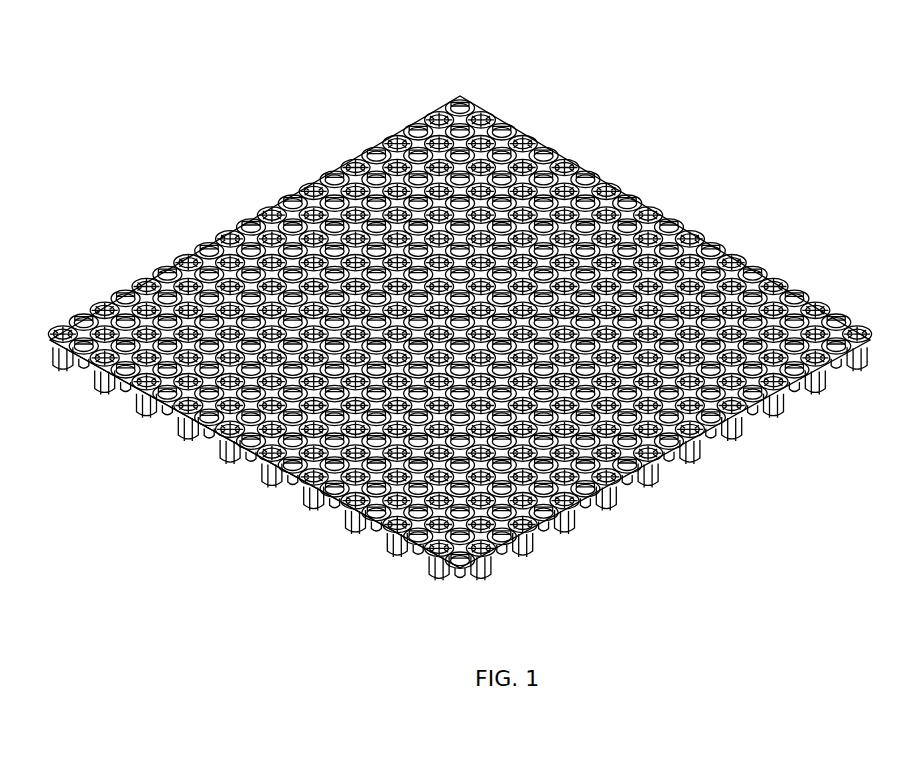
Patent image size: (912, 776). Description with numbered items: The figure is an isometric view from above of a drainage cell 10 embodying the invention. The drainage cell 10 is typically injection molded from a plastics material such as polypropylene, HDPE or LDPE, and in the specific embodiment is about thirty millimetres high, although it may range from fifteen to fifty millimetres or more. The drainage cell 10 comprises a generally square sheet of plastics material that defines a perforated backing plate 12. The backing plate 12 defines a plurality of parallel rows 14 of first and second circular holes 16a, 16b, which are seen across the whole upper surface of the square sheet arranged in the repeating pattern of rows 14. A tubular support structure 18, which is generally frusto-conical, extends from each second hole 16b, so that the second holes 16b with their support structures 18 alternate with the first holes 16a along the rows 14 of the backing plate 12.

The drainage cell 10 is at (575, 91).
The perforated backing plate 12 is at (458, 88).
The parallel rows 14 is at (472, 570).
The first circular holes 16a is at (450, 547).
The second circular holes 16b is at (415, 547).
The tubular support structure 18 is at (437, 550).